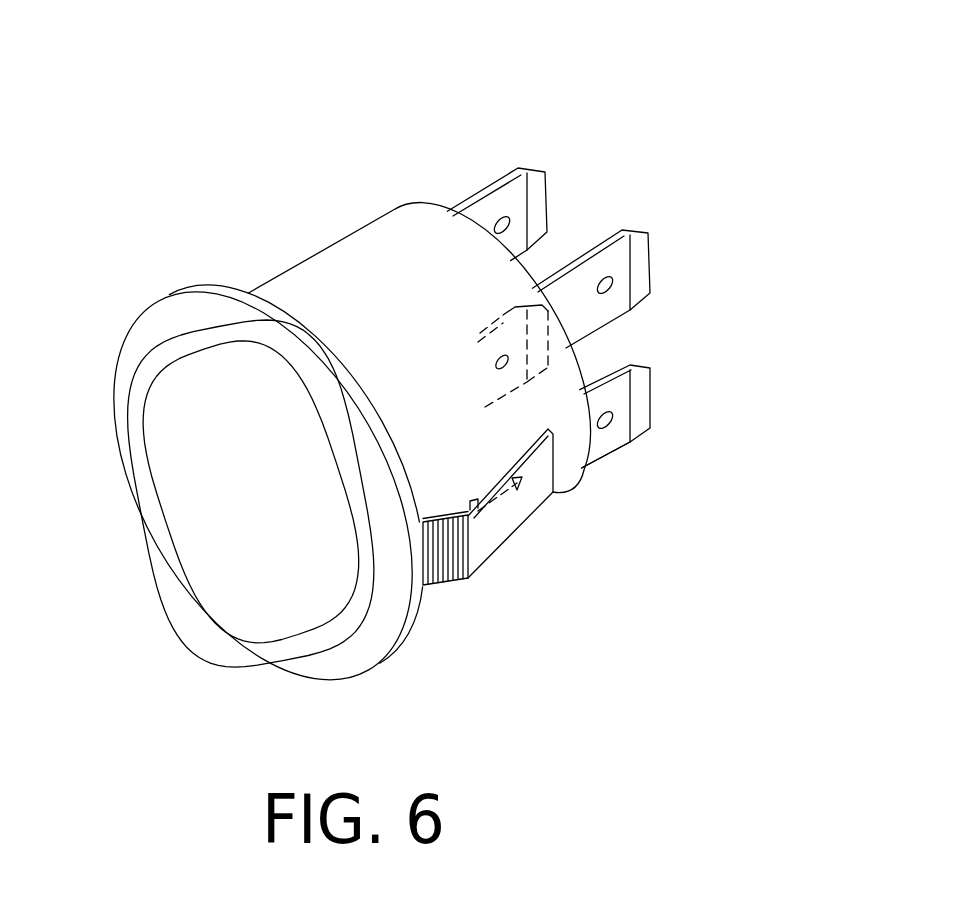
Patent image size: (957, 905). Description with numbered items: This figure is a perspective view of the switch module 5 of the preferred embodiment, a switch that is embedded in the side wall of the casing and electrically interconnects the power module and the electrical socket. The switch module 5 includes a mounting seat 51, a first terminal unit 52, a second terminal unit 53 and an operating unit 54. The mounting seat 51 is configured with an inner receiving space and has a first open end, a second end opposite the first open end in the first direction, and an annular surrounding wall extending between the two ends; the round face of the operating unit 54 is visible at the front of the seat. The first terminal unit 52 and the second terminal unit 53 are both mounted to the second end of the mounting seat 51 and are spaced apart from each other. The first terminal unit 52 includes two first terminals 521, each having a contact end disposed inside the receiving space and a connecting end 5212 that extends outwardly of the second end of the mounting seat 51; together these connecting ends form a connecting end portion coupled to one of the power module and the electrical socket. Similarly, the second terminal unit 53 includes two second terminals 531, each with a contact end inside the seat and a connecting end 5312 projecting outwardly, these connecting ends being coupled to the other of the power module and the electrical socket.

The switch module 5 is at (942, 130).
The mounting seat 51 is at (312, 246).
The first terminal unit 52 is at (648, 78).
The first terminal 521 is at (488, 195).
The connecting end 5212 is at (651, 259).
The second terminal unit 53 is at (762, 297).
The second terminal 531 is at (566, 372).
The connecting end 5312 is at (592, 415).
The operating unit 54 is at (208, 520).